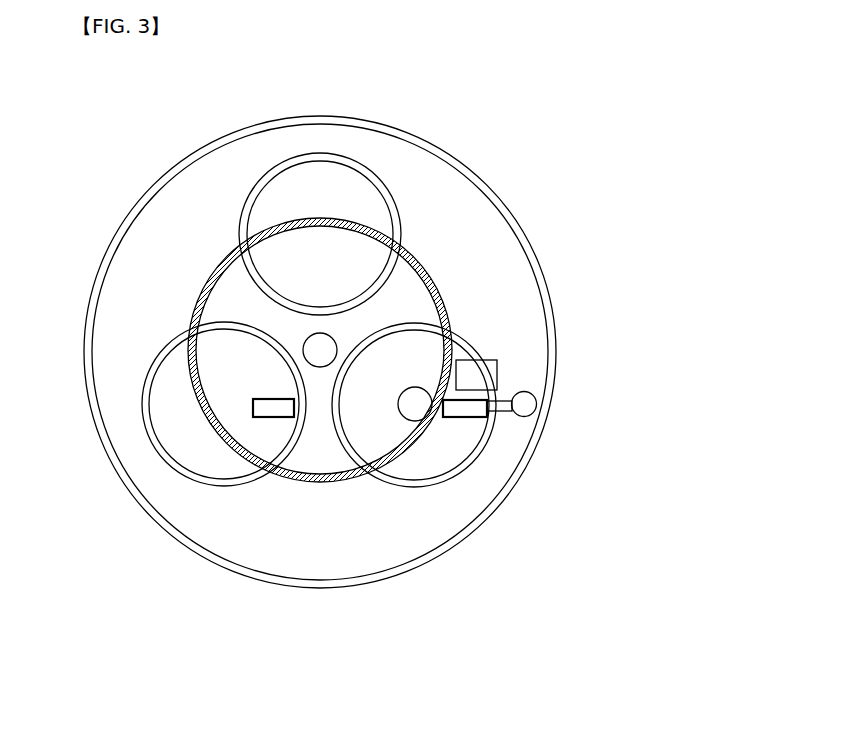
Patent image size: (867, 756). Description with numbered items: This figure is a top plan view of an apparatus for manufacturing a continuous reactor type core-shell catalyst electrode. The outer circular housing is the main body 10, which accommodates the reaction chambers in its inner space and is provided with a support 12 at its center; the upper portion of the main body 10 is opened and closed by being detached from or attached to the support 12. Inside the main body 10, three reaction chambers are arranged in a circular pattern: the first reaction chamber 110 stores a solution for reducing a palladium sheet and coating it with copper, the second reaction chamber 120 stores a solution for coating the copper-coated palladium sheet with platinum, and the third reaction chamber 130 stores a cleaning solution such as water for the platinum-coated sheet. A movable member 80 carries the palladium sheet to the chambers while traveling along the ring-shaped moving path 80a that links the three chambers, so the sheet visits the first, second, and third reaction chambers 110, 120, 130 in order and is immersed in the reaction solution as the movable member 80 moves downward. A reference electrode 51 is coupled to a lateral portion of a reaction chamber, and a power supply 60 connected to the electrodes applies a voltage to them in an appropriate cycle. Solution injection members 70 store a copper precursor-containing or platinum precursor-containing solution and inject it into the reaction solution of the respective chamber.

The main body 10 is at (168, 168).
The support 12 is at (337, 345).
The reference electrode 51 is at (528, 392).
The power supply 60 is at (497, 375).
The solution injection member 70 is at (278, 417).
The movable member 80 is at (423, 410).
The moving path 80a is at (425, 265).
The first reaction chamber 110 is at (483, 452).
The second reaction chamber 120 is at (227, 487).
The third reaction chamber 130 is at (337, 158).